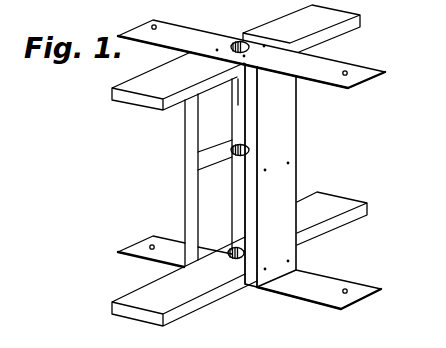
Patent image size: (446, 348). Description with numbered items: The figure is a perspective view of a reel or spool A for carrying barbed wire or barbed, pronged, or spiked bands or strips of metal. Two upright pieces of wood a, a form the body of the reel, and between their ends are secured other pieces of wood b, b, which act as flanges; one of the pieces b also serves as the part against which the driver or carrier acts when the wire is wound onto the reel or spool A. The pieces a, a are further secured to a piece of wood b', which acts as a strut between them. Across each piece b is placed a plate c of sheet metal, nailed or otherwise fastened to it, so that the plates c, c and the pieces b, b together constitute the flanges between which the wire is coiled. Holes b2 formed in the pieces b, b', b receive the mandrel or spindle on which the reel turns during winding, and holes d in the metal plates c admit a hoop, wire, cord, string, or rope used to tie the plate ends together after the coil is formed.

The reel or spool A is at (248, 165).
The pieces of wood a is at (240, 175).
The pieces of wood b is at (239, 165).
The piece of wood b' is at (215, 155).
The holes b2 is at (240, 41).
The plate of sheet metal c is at (251, 164).
The holes d is at (156, 25).